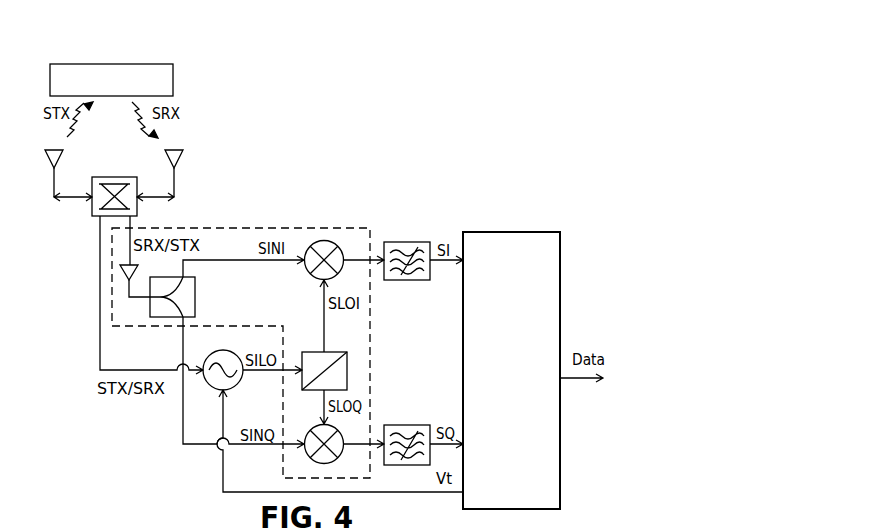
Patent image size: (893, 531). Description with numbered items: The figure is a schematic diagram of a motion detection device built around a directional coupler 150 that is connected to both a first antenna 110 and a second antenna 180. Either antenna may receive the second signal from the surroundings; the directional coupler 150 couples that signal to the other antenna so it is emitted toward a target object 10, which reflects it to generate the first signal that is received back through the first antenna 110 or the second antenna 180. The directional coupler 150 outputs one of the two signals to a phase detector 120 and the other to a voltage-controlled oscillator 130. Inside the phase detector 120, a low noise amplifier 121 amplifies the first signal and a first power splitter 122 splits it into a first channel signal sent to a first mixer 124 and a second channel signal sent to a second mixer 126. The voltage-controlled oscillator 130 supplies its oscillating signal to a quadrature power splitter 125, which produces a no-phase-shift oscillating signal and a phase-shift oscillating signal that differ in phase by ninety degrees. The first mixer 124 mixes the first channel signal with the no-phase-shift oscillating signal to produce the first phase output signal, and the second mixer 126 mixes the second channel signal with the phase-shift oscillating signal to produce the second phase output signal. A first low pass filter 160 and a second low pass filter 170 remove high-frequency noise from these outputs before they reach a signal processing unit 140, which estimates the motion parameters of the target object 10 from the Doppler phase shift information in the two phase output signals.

The target object 10 is at (173, 80).
The first antenna 110 is at (183, 154).
The phase detector 120 is at (298, 227).
The low noise amplifier 121 is at (120, 276).
The first power splitter 122 is at (195, 297).
The first mixer 124 is at (340, 248).
The quadrature power splitter 125 is at (302, 352).
The second mixer 126 is at (310, 428).
The voltage-controlled oscillator 130 is at (240, 384).
The signal processing unit 140 is at (505, 232).
The directional coupler 150 is at (130, 177).
The first low pass filter 160 is at (418, 242).
The second low pass filter 170 is at (418, 425).
The second antenna 180 is at (46, 155).